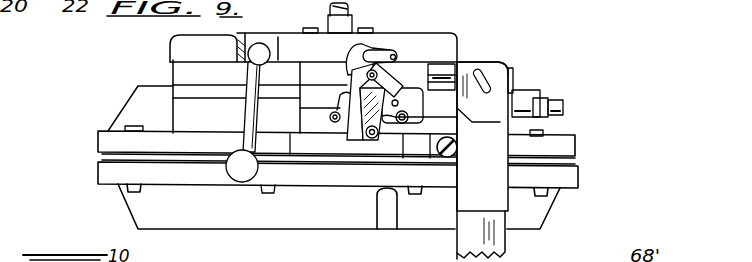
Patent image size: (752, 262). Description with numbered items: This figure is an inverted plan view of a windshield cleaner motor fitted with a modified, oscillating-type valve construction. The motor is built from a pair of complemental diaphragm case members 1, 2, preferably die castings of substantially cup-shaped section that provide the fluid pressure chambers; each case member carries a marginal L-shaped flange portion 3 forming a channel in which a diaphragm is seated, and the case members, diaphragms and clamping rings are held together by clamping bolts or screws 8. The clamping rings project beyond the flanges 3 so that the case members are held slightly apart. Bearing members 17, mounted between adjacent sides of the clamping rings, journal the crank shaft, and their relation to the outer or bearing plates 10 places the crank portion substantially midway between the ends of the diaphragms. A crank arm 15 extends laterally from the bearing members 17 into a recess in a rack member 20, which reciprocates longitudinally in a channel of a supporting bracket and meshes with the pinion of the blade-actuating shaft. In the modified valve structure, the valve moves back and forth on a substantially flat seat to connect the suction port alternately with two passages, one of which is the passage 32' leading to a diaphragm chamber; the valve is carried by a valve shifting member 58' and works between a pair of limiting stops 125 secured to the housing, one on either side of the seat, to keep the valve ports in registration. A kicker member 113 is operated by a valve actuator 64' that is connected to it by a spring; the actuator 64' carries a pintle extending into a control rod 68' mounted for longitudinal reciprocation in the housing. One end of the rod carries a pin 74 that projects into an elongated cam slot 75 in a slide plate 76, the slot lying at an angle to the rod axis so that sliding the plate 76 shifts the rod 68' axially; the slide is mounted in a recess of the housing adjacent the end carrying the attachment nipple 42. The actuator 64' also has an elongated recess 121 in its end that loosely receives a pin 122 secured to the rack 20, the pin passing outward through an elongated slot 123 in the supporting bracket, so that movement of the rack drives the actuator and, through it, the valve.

The diaphragm case member 1 is at (132, 106).
The diaphragm case member 2 is at (137, 201).
The marginal L-shaped flange portion 3 is at (572, 148).
The clamping bolts or screws 8 is at (272, 193).
The bearing plate 10 is at (393, 55).
The crank arm 15 is at (245, 113).
The bearing member 17 is at (230, 161).
The rack member 20 is at (256, 38).
The passage 32' is at (412, 81).
The attachment nipple 42 is at (562, 107).
The valve shifting member 58' is at (417, 128).
The valve actuator 64' is at (312, 108).
The control rod 68' is at (543, 71).
The pin 74 is at (503, 62).
The cam slot 75 is at (505, 92).
The slide plate 76 is at (502, 244).
The kicker member 113 is at (363, 134).
The elongated recess 121 is at (348, 68).
The pin 122 is at (397, 55).
The elongated slot 123 is at (380, 50).
The limiting stops 125 is at (482, 160).